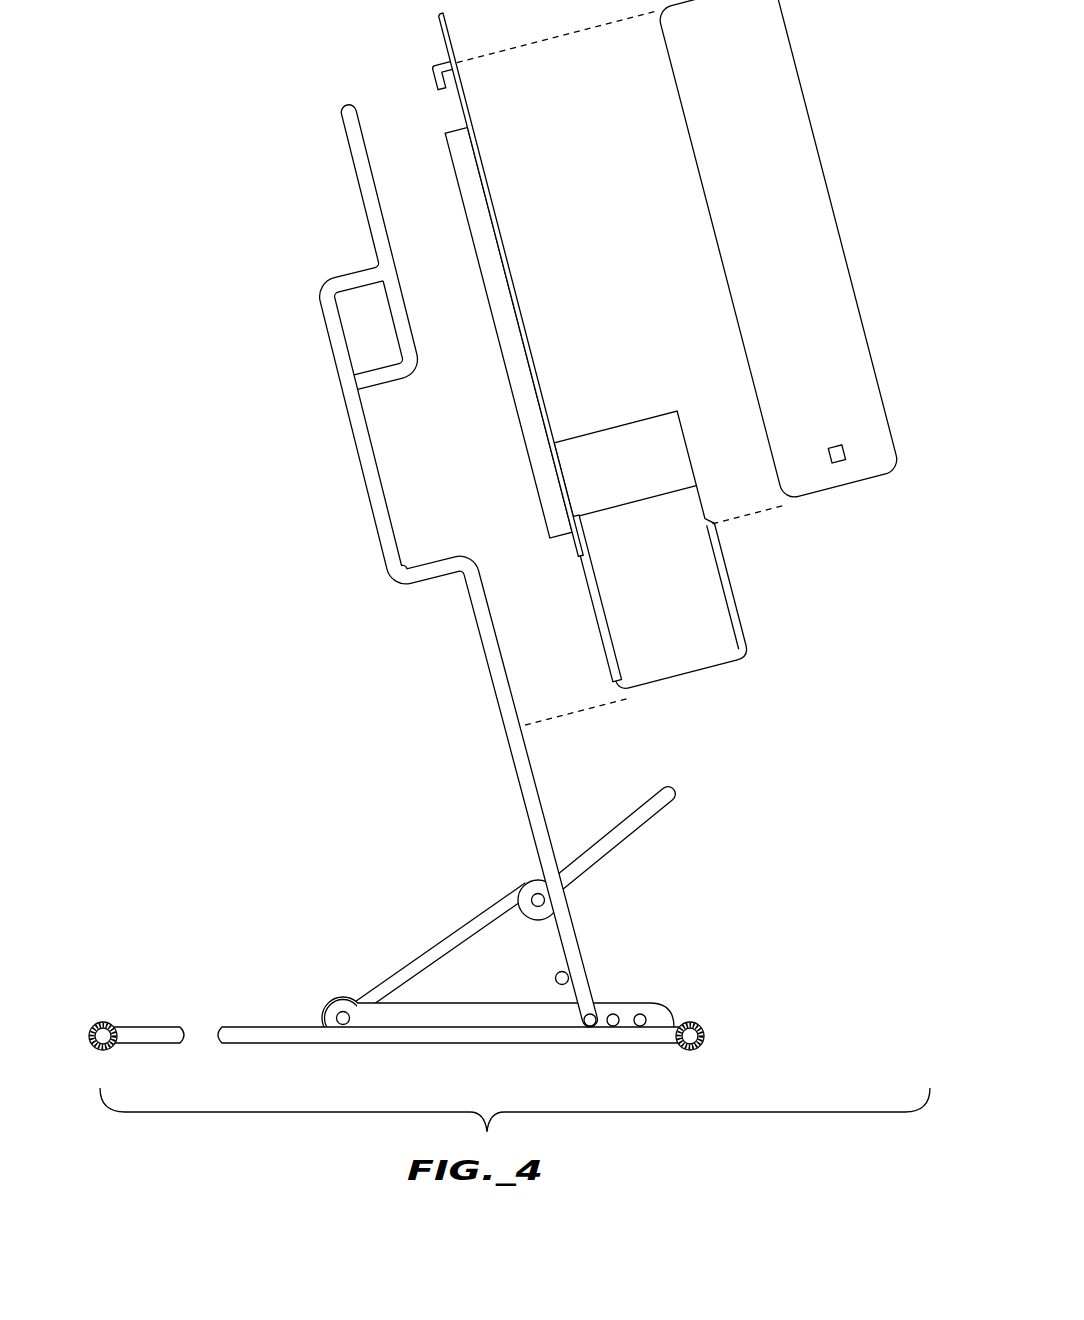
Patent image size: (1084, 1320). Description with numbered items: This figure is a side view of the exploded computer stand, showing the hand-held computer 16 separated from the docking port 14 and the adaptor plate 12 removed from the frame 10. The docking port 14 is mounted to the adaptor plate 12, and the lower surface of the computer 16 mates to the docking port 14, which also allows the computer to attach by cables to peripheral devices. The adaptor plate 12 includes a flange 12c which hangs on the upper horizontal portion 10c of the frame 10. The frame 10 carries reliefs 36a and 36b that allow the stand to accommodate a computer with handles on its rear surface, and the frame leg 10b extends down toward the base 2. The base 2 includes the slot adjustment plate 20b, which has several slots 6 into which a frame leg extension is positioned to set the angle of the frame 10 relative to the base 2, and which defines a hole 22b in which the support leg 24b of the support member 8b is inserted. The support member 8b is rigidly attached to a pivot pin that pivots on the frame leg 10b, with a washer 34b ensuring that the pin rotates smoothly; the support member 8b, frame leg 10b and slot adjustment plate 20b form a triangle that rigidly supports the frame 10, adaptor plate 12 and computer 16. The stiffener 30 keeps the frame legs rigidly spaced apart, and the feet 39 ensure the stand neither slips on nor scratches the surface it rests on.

The base 2 is at (668, 1020).
The slots 6 is at (642, 1026).
The support member 8b is at (630, 817).
The frame 10 is at (385, 546).
The frame leg 10b is at (512, 762).
The upper horizontal portion of frame 10c is at (346, 103).
The adaptor plate 12 is at (450, 43).
The flange 12c is at (430, 66).
The docking port 14 is at (665, 675).
The hand-held computer 16 is at (782, 85).
The slot adjustment plate 20b is at (510, 1022).
The hole 22b is at (345, 1027).
The support leg 24b is at (340, 1000).
The stiffener 30 is at (567, 975).
The washer 34b is at (540, 917).
The relief 36a is at (403, 338).
The relief 36b is at (368, 462).
The feet 39 is at (690, 1023).